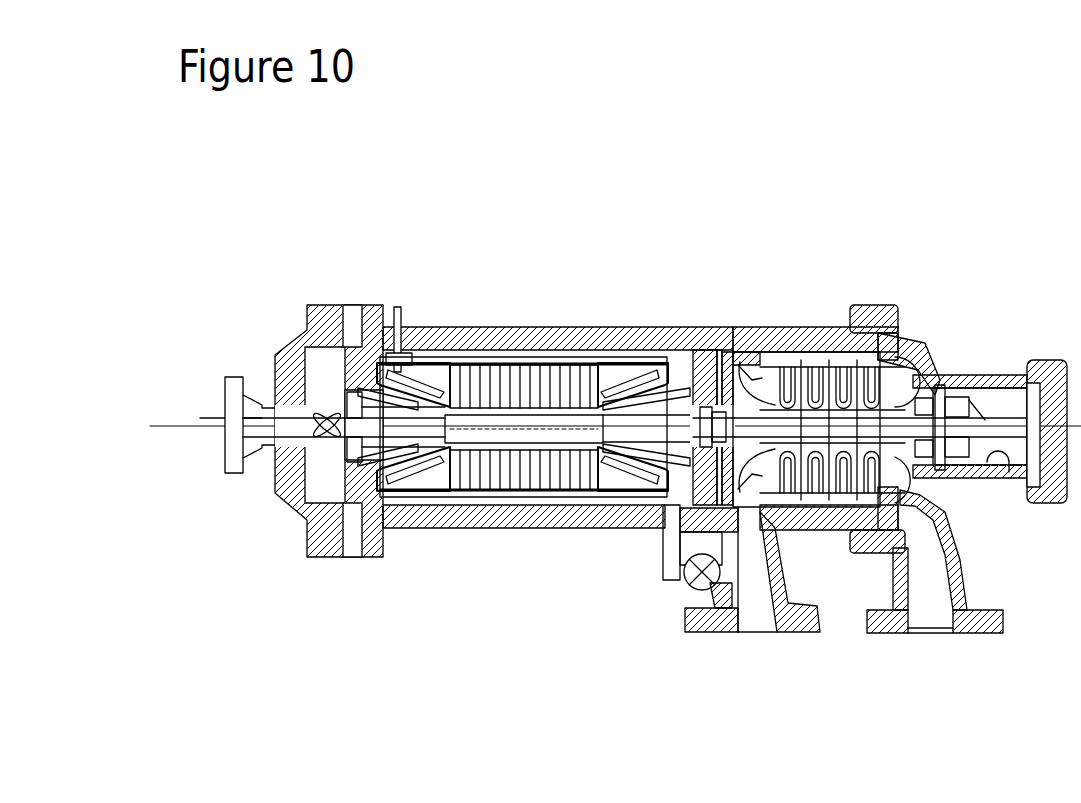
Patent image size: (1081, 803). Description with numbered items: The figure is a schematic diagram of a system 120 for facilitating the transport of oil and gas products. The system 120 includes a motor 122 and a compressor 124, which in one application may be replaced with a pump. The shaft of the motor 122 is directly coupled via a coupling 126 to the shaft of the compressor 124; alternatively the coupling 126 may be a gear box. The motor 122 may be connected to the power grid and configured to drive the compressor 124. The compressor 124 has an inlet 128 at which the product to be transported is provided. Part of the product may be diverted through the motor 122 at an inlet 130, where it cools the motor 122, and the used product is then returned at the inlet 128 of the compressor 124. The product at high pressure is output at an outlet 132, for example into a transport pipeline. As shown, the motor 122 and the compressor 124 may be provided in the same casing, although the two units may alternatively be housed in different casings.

The system 120 is at (658, 143).
The motor 122 is at (520, 289).
The compressor 124 is at (850, 292).
The coupling 126 is at (697, 400).
The inlet 128 is at (756, 646).
The inlet 130 is at (225, 418).
The outlet 132 is at (918, 523).